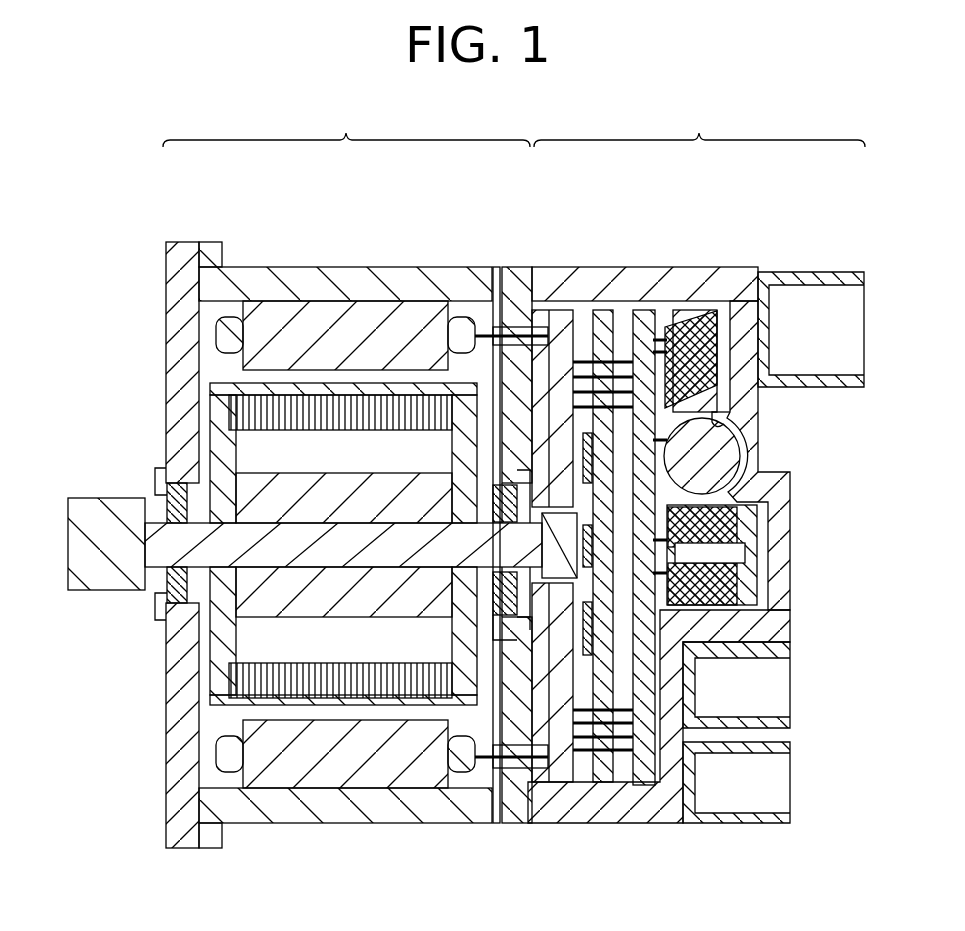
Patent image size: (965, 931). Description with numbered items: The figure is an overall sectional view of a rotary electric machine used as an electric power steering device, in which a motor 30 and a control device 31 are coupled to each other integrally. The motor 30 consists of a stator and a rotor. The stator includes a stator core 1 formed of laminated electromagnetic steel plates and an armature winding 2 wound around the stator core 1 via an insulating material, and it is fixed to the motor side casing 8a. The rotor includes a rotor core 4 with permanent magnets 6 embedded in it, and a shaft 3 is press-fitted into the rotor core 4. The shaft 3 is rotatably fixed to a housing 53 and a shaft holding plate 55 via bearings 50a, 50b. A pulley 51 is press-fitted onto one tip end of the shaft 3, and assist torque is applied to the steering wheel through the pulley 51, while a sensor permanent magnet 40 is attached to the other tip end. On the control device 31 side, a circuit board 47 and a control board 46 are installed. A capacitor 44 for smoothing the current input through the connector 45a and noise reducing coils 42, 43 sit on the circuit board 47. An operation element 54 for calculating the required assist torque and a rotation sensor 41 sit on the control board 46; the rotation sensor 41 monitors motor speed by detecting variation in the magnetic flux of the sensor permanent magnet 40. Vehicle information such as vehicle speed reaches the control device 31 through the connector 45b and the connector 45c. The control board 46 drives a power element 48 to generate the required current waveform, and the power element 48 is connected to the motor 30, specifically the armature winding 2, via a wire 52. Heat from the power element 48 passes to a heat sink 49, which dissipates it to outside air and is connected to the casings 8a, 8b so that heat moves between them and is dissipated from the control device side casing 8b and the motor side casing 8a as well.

The stator core 1 is at (345, 312).
The armature winding 2 is at (458, 312).
The shaft 3 is at (158, 552).
The rotor core 4 is at (260, 603).
The permanent magnets 6 is at (240, 412).
The motor side casing 8a is at (258, 283).
The control device side casing 8b is at (648, 290).
The motor 30 is at (327, 127).
The control device 31 is at (680, 127).
The sensor permanent magnet 40 is at (560, 558).
The rotation sensor 41 is at (582, 753).
The noise reducing coil 42 is at (690, 325).
The noise reducing coil 43 is at (740, 595).
The capacitor 44 is at (707, 467).
The connector 45a is at (820, 335).
The connector 45b is at (750, 690).
The connector 45c is at (750, 785).
The control board 46 is at (602, 758).
The circuit board 47 is at (642, 760).
The power element 48 is at (500, 590).
The heat sink 49 is at (510, 300).
The bearing 50a is at (497, 650).
The bearing 50b is at (178, 597).
The pulley 51 is at (88, 510).
The wire 52 is at (548, 318).
The housing 53 is at (182, 282).
The operation element 54 is at (727, 420).
The shaft holding plate 55 is at (493, 330).